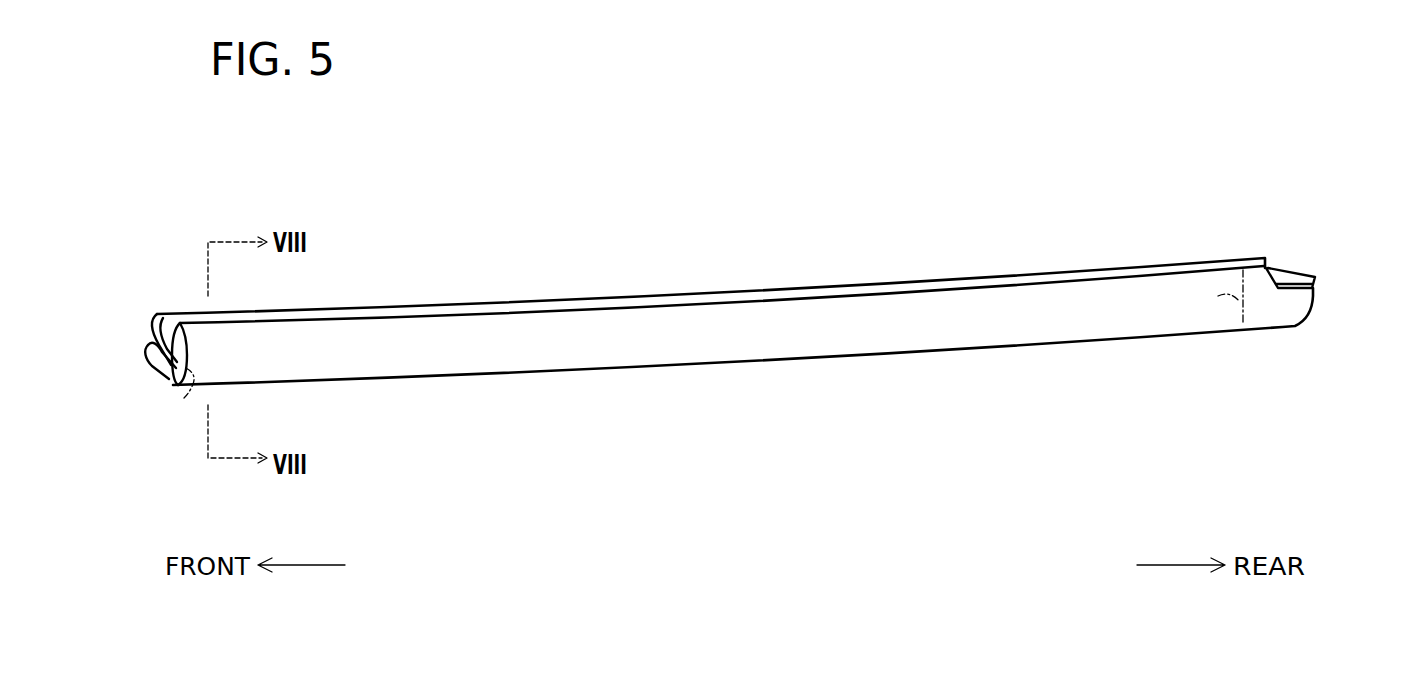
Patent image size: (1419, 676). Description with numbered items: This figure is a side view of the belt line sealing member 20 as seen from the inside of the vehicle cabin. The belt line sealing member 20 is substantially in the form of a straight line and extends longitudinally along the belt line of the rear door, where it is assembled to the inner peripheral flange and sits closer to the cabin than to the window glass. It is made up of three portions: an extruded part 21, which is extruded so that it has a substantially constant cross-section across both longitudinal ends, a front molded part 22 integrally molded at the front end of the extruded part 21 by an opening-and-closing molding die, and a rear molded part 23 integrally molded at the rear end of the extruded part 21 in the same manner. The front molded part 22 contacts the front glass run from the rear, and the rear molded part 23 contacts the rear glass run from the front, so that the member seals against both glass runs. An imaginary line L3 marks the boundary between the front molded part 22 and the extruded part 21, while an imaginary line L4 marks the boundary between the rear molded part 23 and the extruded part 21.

The belt line sealing member 20 is at (806, 287).
The extruded part 21 is at (728, 366).
The front molded part 22 is at (153, 356).
The rear molded part 23 is at (1316, 293).
The imaginary line L3 is at (184, 398).
The imaginary line L4 is at (1218, 296).